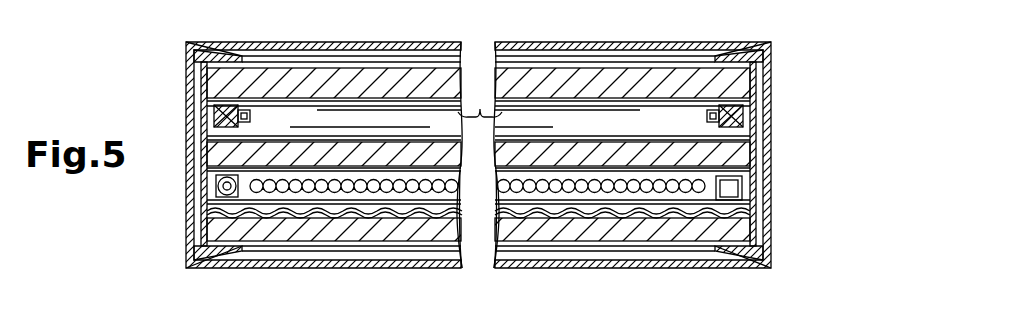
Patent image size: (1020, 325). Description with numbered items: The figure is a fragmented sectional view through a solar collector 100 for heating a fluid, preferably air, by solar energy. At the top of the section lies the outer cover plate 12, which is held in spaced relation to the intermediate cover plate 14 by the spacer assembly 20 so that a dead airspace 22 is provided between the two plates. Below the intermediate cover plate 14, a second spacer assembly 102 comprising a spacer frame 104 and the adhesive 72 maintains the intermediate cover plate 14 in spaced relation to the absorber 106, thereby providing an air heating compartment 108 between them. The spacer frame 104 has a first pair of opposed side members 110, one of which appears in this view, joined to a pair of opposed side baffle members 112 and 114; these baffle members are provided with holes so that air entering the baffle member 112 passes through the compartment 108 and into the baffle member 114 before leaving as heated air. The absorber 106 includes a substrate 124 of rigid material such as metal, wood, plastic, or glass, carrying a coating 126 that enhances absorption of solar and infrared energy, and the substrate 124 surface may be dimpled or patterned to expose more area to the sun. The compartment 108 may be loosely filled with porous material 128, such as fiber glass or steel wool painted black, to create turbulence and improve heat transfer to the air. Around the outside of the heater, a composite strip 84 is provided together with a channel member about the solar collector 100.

The solar collector 100 is at (795, 55).
The outer cover plate 12 is at (396, 77).
The intermediate cover plate 14 is at (562, 141).
The dead airspace 22 is at (480, 108).
The opposed side members 110 is at (480, 155).
The spacer assembly 20 is at (208, 112).
The adhesive 72 is at (204, 162).
The spacer frame 104 is at (210, 175).
The second spacer assembly 102 is at (212, 188).
The side baffle member 114 is at (212, 198).
The side baffle member 112 is at (756, 200).
The composite strip 84 is at (192, 262).
The coating 126 is at (288, 212).
The substrate 124 is at (348, 230).
The porous material 128 is at (414, 198).
The air heating compartment 108 is at (461, 206).
The absorber 106 is at (487, 232).